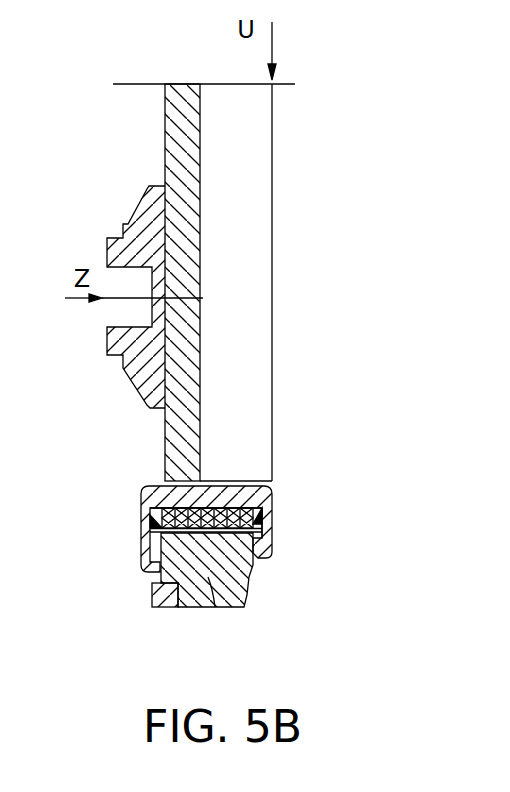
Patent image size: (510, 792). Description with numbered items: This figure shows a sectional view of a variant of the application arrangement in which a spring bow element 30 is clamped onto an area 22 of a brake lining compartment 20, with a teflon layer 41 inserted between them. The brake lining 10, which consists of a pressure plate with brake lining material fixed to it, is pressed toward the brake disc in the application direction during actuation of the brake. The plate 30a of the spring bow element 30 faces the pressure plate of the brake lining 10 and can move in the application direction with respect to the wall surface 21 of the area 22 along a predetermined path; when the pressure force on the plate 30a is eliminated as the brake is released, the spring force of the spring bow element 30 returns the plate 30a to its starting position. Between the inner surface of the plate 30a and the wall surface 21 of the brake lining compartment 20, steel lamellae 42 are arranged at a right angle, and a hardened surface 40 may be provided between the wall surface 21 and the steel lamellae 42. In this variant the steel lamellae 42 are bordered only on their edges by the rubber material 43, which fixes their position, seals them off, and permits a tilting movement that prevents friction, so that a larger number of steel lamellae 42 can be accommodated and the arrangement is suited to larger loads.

The brake lining 10 is at (303, 200).
The brake lining compartment 20 is at (264, 602).
The wall surface 21 is at (248, 577).
The area of the brake lining compartment 22 is at (223, 610).
The spring bow element 30 is at (194, 506).
The plate 30a is at (268, 496).
The hardened surface 40 is at (148, 538).
The teflon layer 41 is at (173, 498).
The steel lamellae 42 is at (227, 512).
The rubber material 43 is at (236, 515).